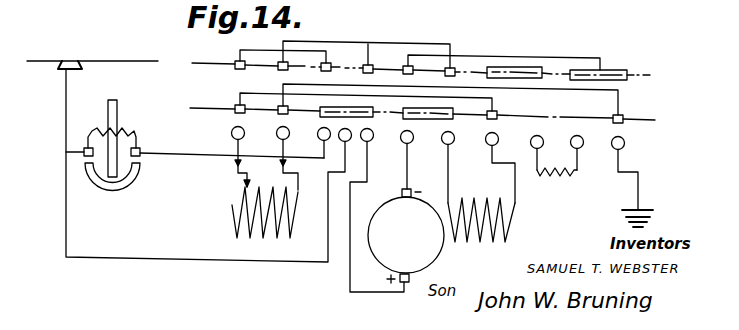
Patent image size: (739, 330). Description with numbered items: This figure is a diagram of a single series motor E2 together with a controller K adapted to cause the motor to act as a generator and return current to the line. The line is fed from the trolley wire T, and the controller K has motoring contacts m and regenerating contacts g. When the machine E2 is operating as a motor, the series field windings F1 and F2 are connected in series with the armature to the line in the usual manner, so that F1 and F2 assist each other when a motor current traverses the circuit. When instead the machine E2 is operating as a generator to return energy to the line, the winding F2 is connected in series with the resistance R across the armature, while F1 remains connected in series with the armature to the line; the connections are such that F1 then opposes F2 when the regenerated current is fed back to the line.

The trolley wire T is at (120, 61).
The regenerating contacts g is at (429, 70).
The controller K is at (448, 95).
The motoring contacts m is at (434, 109).
The series field winding F1 is at (274, 216).
The series motor E2 is at (406, 236).
The series field winding F2 is at (481, 236).
The resistance R is at (557, 185).